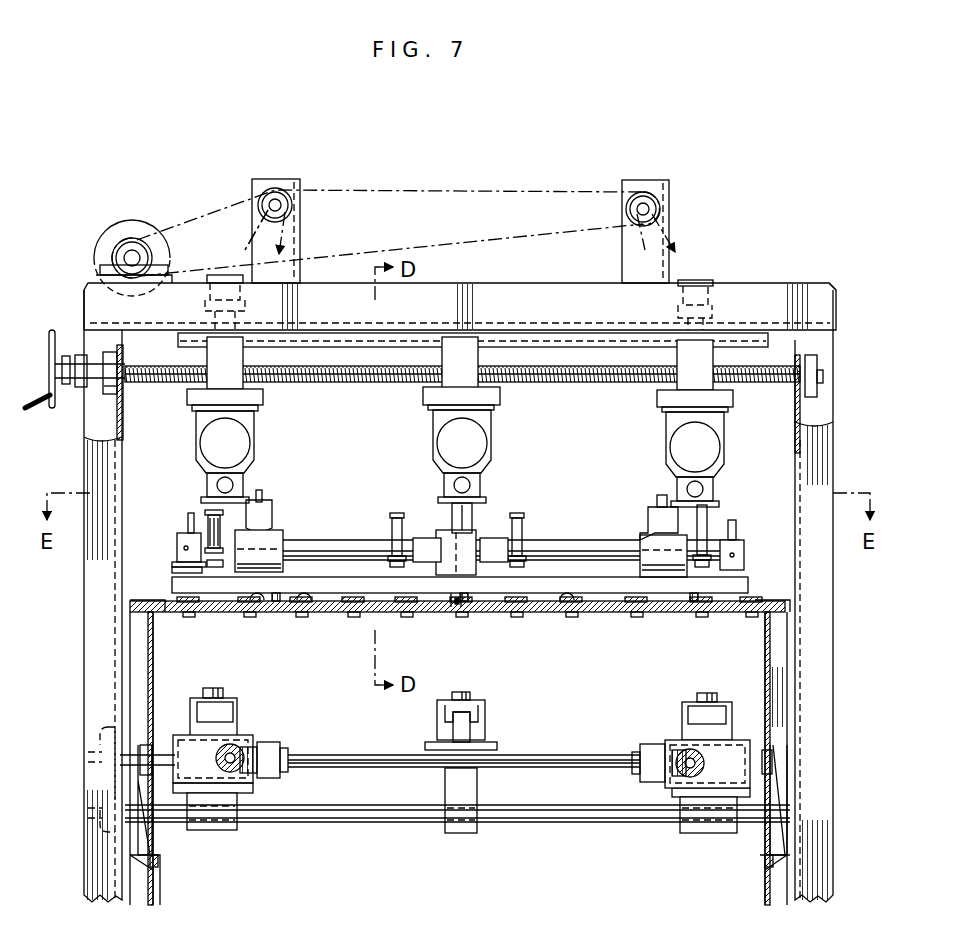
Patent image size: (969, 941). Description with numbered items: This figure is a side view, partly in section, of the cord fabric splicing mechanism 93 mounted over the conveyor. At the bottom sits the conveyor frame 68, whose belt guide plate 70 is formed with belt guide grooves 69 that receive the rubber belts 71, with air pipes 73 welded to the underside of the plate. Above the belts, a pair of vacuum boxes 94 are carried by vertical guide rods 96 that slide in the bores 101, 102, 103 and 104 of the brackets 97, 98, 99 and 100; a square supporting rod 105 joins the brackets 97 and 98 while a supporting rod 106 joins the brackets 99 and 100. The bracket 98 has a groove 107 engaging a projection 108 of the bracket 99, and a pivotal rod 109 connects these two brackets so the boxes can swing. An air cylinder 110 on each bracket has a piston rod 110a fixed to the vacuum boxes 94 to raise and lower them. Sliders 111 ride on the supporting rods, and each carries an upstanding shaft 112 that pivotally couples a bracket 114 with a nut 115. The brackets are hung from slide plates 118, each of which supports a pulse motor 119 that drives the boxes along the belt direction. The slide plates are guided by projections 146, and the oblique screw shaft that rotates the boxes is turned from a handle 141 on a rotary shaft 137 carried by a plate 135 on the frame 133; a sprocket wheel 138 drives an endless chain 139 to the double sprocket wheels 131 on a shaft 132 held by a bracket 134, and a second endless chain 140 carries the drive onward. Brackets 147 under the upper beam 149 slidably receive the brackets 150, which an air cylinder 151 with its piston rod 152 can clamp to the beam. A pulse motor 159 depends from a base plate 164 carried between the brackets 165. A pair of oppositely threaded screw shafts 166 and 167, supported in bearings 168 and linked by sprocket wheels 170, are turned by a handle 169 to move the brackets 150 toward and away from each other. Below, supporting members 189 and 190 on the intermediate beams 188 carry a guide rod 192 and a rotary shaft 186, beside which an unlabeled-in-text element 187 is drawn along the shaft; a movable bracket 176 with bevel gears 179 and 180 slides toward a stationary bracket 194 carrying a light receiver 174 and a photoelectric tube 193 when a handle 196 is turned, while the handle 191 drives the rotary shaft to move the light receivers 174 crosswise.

The conveyor frame 68 is at (145, 660).
The belt guide grooves 69 is at (305, 612).
The belt guide plate 70 is at (230, 607).
The rubber belts 71 is at (268, 612).
The air pipes 73 is at (190, 612).
The cord fabric splicing mechanism 93 is at (806, 245).
The vacuum boxes 94 is at (180, 587).
The guide rods 96 is at (190, 515).
The bracket 97 is at (178, 552).
The bracket 98 is at (440, 530).
The bracket 99 is at (470, 512).
The bracket 100 is at (745, 545).
The bore 101 is at (178, 540).
The bore 102 is at (396, 515).
The bore 103 is at (520, 535).
The bore 104 is at (735, 560).
The supporting rod 105 is at (355, 545).
The supporting rod 106 is at (610, 550).
The groove 107 is at (452, 600).
The projection 108 is at (462, 600).
The pivotal rod 109 is at (475, 507).
The air cylinder 110 is at (205, 500).
The piston rod 110a is at (180, 580).
The sliders 111 is at (285, 540).
The upstanding shaft 112 is at (262, 490).
The bracket 114 is at (274, 515).
The nut 115 is at (260, 498).
The slide plates 118 is at (260, 408).
The pulse motor 119 is at (240, 445).
The double sprocket wheels 131 is at (281, 190).
The shaft 132 is at (292, 204).
The frame 133 is at (833, 705).
The bracket 134 is at (272, 179).
The plate 135 is at (100, 270).
The rotary shaft 137 is at (128, 254).
The sprocket wheel 138 is at (140, 240).
The endless chain 139 is at (475, 190).
The endless chain 140 is at (316, 246).
The handle 141 is at (132, 222).
The projections 146 is at (190, 405).
The brackets 147 is at (556, 340).
The upper beam 149 is at (817, 298).
The brackets 150 is at (215, 355).
The air cylinder 151 is at (698, 280).
The piston rod 152 is at (702, 325).
The pulse motor 159 is at (478, 445).
The base plate 164 is at (500, 400).
The brackets 165 is at (448, 350).
The screw shaft 166 is at (52, 340).
The screw shaft 167 is at (135, 382).
The bearings 168 is at (100, 395).
The handle 169 is at (35, 400).
The sprocket wheels 170 is at (80, 355).
The light receivers 174 is at (212, 690).
The movable bracket 176 is at (215, 832).
The bevel gear 179 is at (232, 745).
The bevel gear 180 is at (252, 750).
The rotary shaft 186 is at (546, 765).
The shaft sleeve 187 is at (586, 755).
The intermediate beams 188 is at (160, 880).
The supporting member 189 is at (770, 835).
The supporting member 190 is at (145, 835).
The handle 191 is at (98, 755).
The guide rod 192 is at (362, 825).
The reflection type photoelectric tube 193 is at (470, 728).
The stationary bracket 194 is at (428, 745).
The handle 196 is at (100, 810).